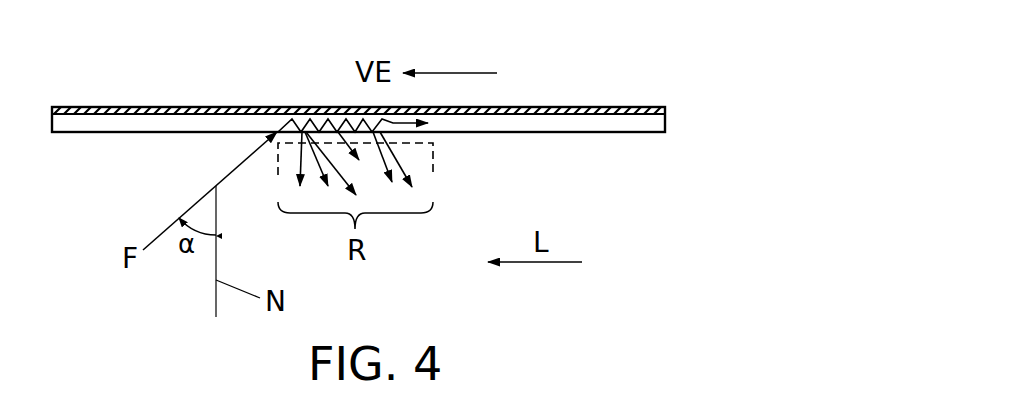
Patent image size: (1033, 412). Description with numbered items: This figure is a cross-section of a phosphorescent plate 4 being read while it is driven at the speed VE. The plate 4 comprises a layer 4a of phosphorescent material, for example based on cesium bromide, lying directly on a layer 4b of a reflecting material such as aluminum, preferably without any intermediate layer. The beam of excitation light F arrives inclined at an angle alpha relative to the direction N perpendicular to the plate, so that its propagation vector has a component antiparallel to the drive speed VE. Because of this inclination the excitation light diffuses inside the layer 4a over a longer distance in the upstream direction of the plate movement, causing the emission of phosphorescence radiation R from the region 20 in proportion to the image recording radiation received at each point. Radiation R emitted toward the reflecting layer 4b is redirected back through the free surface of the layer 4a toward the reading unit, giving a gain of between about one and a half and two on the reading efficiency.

The phosphorescent plate 4 is at (398, 135).
The layer of phosphorescent material 4a is at (658, 122).
The layer of reflecting material 4b is at (630, 107).
The light output region 20 is at (419, 153).